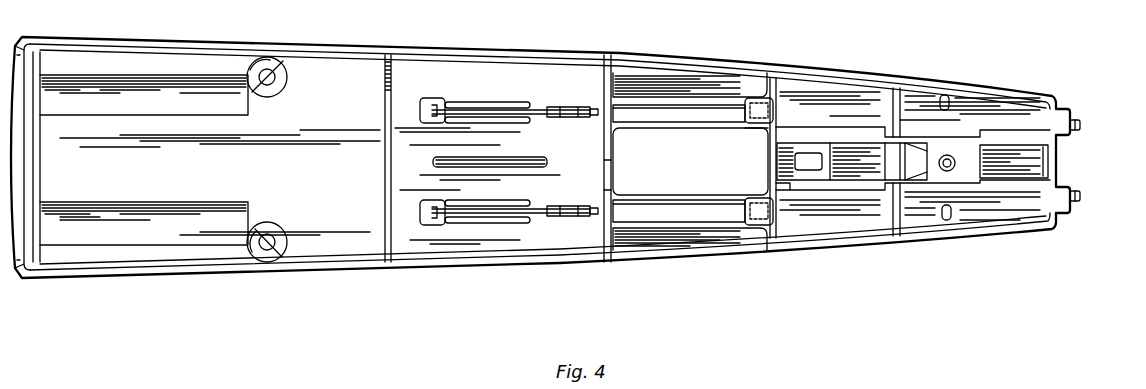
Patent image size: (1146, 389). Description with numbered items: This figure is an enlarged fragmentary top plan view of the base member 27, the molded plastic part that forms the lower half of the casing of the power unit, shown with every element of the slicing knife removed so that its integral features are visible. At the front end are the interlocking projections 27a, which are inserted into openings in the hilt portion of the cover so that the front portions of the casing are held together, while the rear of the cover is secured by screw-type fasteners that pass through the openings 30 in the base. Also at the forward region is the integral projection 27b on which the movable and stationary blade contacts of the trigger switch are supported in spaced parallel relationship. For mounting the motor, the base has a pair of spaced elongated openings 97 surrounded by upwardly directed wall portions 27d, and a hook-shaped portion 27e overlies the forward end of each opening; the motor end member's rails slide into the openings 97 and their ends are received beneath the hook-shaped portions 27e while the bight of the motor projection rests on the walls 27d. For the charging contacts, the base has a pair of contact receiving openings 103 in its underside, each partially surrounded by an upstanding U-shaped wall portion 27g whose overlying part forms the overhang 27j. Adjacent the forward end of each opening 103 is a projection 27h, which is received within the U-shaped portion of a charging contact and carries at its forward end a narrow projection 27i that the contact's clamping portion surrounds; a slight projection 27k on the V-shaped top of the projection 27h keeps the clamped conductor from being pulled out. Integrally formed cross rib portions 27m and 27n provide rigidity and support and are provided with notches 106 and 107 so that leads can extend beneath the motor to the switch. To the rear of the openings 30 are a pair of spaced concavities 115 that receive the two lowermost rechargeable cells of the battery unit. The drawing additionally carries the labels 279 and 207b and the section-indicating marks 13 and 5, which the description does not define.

The base member 27 is at (374, 47).
The interlocking projections 27a is at (1081, 127).
The integral projection 27b is at (557, 207).
The wall portions 27d is at (683, 105).
The hook-shaped portion 27e is at (773, 98).
The U-shaped wall portion 27g is at (536, 104).
The guide rail 279 is at (514, 223).
The projection 27h is at (556, 118).
The narrow projection 27i is at (633, 60).
The overhang 27j is at (425, 98).
The projection 27k is at (562, 107).
The cross rib portion 27m is at (611, 187).
The cross rib portion 27n is at (733, 153).
The openings 30 is at (272, 72).
The elongated openings 97 is at (740, 104).
The contact receiving openings 103 is at (483, 110).
The notch 106 is at (617, 157).
The notch 107 is at (788, 164).
The concavities 115 is at (102, 82).
The latch member 207b is at (815, 153).
The section line 13 is at (402, 120).
The section line 5 is at (599, 250).